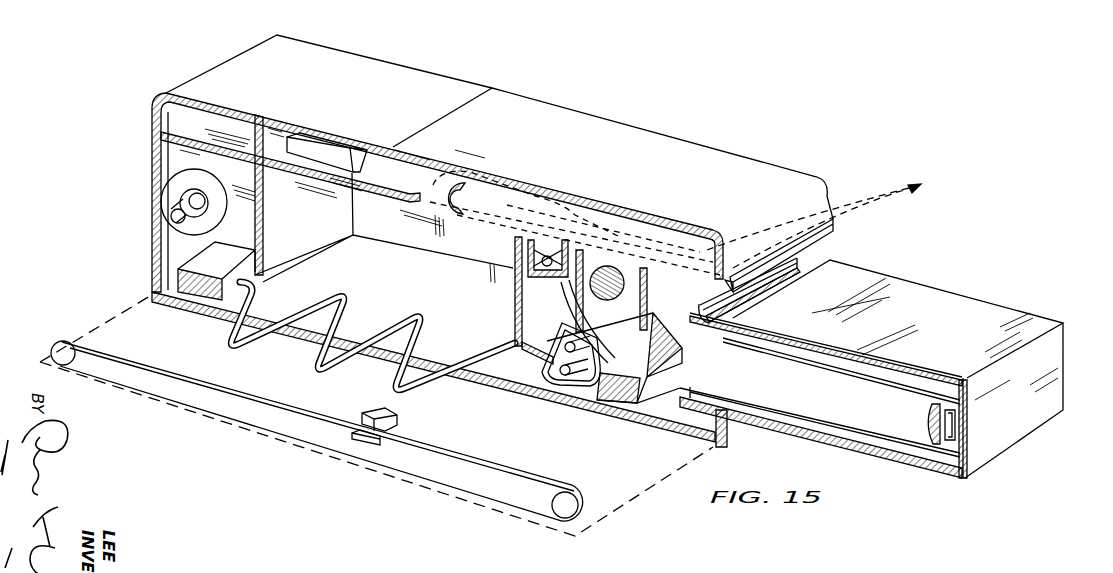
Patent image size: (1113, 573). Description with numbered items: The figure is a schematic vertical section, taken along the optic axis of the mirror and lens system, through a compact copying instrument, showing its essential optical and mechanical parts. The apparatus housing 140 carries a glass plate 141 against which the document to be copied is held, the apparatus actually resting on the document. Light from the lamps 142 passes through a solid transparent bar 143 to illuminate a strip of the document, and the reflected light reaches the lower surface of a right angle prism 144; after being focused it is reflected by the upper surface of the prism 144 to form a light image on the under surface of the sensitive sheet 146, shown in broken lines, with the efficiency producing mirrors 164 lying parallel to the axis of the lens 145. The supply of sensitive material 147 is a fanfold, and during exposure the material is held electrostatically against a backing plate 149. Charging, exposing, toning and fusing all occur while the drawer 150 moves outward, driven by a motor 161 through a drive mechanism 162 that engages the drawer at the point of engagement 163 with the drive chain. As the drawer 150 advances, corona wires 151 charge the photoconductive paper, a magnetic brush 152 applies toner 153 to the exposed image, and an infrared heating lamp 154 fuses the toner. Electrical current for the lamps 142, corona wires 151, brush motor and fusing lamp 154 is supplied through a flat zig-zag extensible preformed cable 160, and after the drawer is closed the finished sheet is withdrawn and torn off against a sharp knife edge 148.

The apparatus housing 140 is at (377, 77).
The glass plate 141 is at (667, 430).
The lamps 142 is at (563, 373).
The solid transparent bar 143 is at (617, 393).
The right angle prism 144 is at (685, 353).
The lens 145 is at (932, 418).
The sensitive sheet 146 is at (654, 248).
The supply of sensitive material 147 is at (555, 193).
The sharp knife edge 148 is at (753, 263).
The backing plate 149 is at (578, 262).
The drawer 150 is at (940, 305).
The corona wires 151 is at (800, 263).
The magnetic brush 152 is at (625, 312).
The toner 153 is at (668, 287).
The infrared heating lamp 154 is at (530, 246).
The extensible preformed cable 160 is at (318, 298).
The motor 161 is at (163, 202).
The drive mechanism 162 is at (62, 352).
The point of engagement of the drawer to the drive chain 163 is at (398, 418).
The efficiency producing mirrors 164 is at (827, 423).